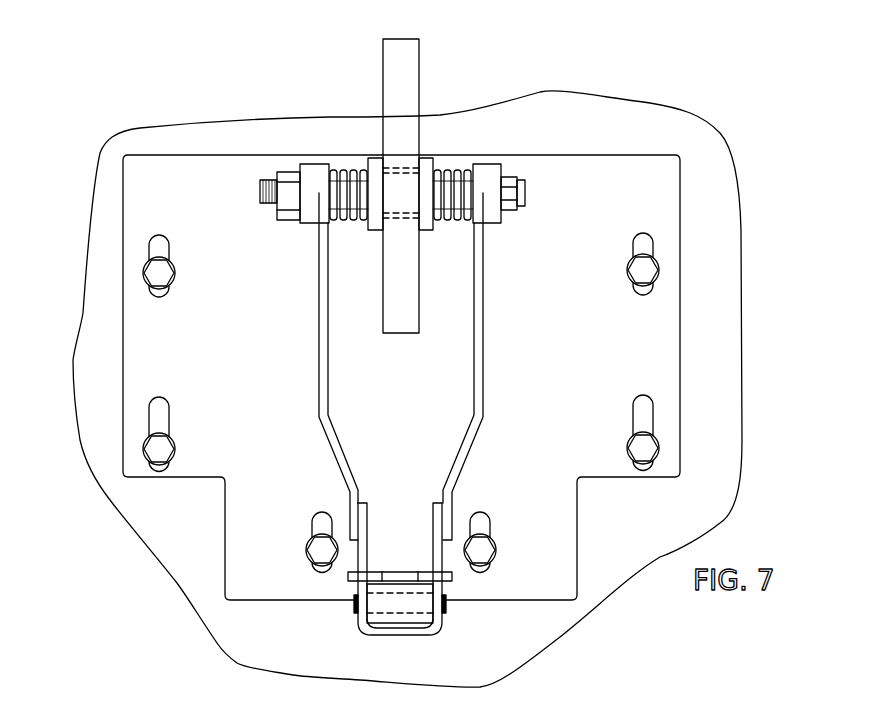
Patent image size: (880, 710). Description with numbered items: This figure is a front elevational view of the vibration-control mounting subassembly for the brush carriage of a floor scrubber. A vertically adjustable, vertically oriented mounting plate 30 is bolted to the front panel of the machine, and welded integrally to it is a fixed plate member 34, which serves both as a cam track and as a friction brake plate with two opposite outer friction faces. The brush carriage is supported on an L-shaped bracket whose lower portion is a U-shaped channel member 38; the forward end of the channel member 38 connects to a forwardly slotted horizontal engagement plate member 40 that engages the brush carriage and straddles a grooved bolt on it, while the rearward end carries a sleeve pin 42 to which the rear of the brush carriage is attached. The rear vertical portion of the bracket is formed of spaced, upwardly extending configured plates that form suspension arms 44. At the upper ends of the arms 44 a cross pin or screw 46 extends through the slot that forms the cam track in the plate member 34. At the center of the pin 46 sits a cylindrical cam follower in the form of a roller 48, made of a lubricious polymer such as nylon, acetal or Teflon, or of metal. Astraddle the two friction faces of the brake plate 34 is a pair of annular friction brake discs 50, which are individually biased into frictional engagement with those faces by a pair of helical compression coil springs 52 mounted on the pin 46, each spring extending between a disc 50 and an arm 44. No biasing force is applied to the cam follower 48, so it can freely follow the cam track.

The mounting plate 30 is at (637, 366).
The fixed plate member 34 is at (413, 85).
The U-shaped channel member 38 is at (438, 632).
The horizontal engagement plate member 40 is at (370, 575).
The sleeve pin 42 is at (387, 620).
The suspension arms 44 is at (328, 363).
The cross pin or screw 46 is at (517, 190).
The cam follower roller 48 is at (400, 223).
The friction brake discs 50 is at (377, 152).
The helical compression coil springs 52 is at (352, 170).